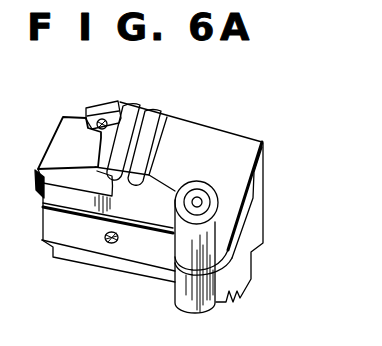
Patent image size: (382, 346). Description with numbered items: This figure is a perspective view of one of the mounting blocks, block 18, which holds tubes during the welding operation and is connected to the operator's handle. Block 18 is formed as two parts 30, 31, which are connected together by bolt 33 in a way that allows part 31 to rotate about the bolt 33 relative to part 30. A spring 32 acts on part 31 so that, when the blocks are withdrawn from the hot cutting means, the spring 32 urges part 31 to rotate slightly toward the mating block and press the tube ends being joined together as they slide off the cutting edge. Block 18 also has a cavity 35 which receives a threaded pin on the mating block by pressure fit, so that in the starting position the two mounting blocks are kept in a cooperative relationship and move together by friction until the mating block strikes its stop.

The block 18 is at (218, 140).
The part 30 is at (263, 217).
The part 31 is at (263, 151).
The spring 32 is at (103, 119).
The bolt 33 is at (200, 204).
The cavity 35 is at (107, 243).